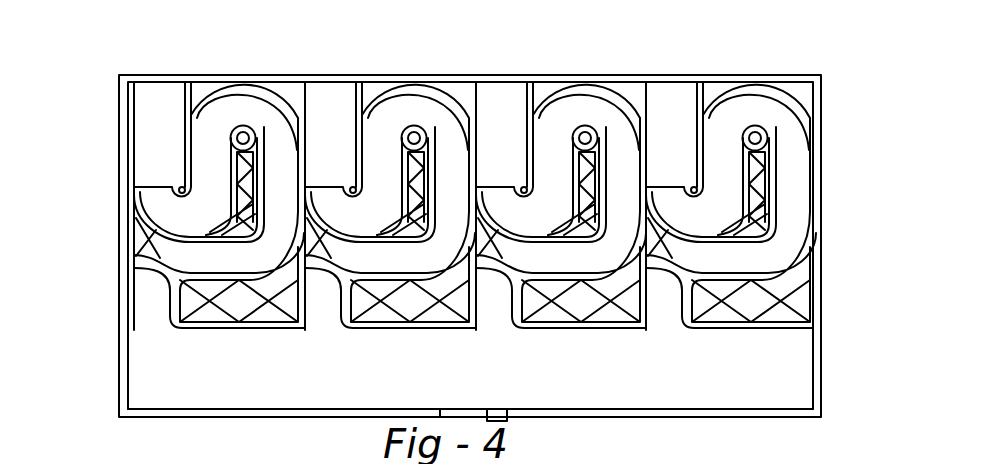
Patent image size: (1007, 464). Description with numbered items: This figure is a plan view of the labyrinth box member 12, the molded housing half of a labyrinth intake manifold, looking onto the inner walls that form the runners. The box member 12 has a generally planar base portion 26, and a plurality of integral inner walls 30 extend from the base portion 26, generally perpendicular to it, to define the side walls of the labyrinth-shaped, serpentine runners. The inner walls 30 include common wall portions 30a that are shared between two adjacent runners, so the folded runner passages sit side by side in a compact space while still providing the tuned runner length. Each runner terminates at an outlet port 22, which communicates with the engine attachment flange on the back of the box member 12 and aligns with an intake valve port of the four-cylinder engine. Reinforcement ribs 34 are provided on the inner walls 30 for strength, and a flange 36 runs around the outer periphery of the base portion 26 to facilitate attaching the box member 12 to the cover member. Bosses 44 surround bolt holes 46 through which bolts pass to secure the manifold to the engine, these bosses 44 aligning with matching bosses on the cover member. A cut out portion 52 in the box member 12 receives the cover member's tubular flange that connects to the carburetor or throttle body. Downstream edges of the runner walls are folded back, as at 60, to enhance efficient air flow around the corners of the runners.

The labyrinth box member 12 is at (104, 292).
The outlet port 22 is at (155, 108).
The base portion 26 is at (193, 368).
The inner walls 30 is at (228, 237).
The common wall portions 30a is at (286, 117).
The reinforcement ribs 34 is at (133, 212).
The flange 36 is at (823, 287).
The bosses 44 is at (235, 130).
The bolt holes 46 is at (243, 126).
The cut out portion 52 is at (492, 414).
The folded back downstream edge 60 is at (695, 197).